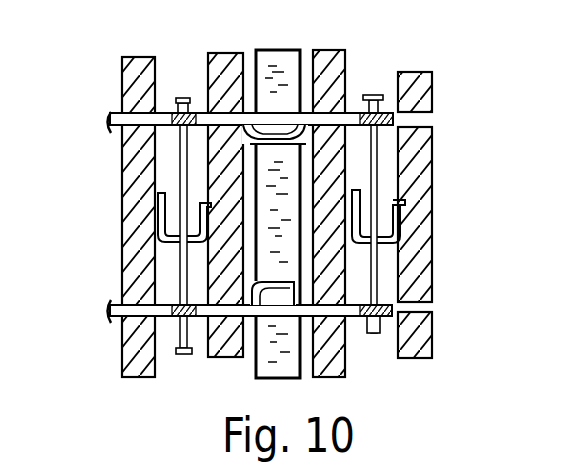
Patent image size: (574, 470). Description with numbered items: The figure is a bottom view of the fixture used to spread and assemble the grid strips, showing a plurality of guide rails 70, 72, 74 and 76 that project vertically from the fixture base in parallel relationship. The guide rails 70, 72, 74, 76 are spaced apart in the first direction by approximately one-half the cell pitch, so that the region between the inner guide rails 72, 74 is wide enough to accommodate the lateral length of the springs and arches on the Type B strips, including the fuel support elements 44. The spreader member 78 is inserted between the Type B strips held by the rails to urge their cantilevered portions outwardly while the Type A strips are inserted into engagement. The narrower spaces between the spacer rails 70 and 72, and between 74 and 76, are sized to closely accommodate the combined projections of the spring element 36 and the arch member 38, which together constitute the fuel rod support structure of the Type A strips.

The spring member 36 is at (403, 203).
The lower arch 38 is at (354, 243).
The fuel support element 44 is at (262, 284).
The guide rail 70 is at (434, 227).
The guide rail 72 is at (345, 62).
The guide rail 74 is at (208, 62).
The guide rail 76 is at (122, 153).
The spreader member 78 is at (250, 171).